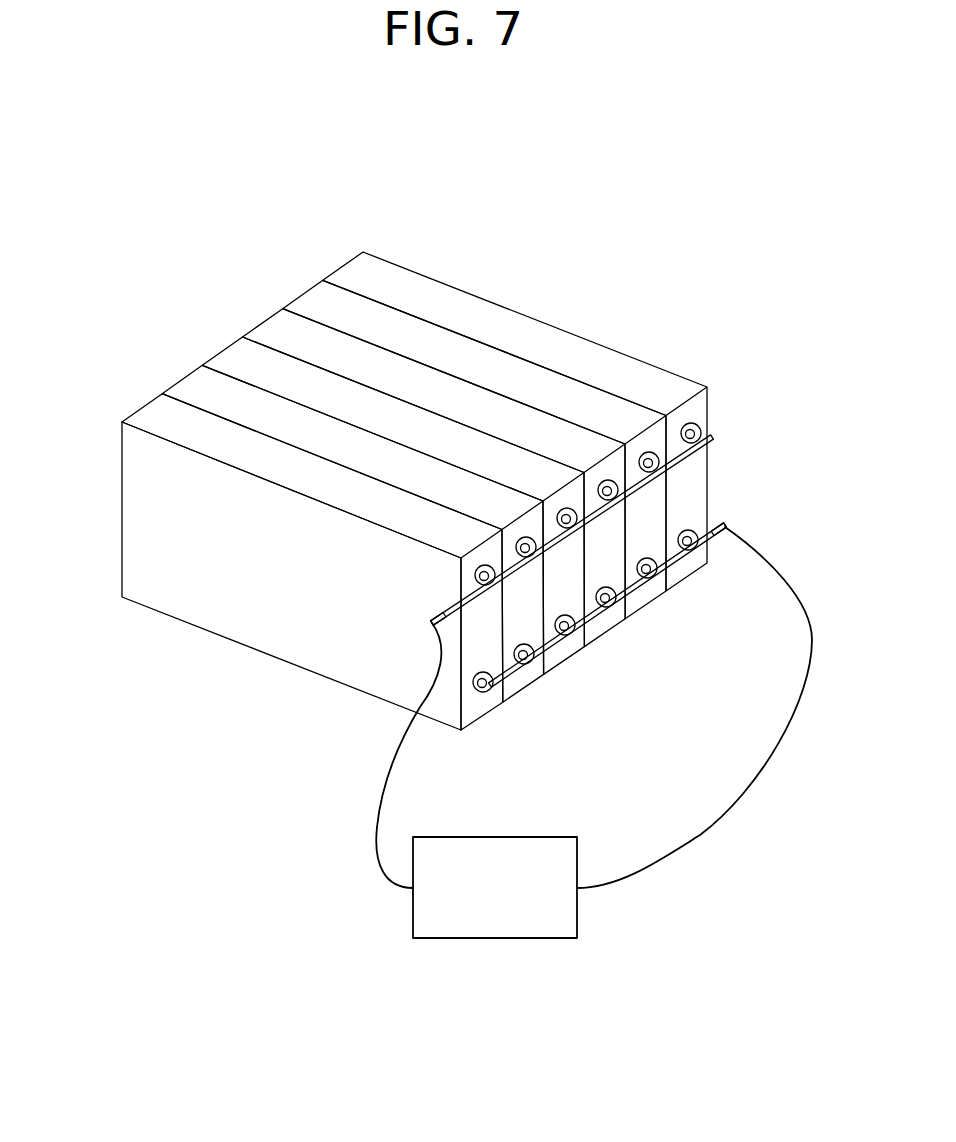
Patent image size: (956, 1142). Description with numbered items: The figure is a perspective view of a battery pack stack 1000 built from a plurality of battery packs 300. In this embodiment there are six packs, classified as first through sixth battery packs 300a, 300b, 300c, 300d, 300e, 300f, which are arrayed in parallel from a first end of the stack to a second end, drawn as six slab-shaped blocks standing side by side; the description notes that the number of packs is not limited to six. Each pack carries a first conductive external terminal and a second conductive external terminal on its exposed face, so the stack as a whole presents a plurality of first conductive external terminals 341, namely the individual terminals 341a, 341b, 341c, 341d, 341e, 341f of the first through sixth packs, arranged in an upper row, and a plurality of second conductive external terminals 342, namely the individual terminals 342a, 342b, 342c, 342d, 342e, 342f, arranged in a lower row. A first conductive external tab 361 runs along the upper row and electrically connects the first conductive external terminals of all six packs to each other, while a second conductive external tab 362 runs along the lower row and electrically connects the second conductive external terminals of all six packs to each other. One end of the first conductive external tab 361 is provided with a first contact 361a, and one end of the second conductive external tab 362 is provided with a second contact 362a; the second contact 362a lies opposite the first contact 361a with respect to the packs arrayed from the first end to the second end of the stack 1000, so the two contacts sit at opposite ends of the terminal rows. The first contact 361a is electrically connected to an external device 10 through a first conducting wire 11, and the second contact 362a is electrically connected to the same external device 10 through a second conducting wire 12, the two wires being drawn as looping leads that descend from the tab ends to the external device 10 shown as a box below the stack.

The battery pack stack 1000 is at (608, 210).
The battery packs 300 is at (139, 250).
The first battery pack 300a is at (139, 405).
The second battery pack 300b is at (180, 377).
The third battery pack 300c is at (221, 348).
The fourth battery pack 300d is at (262, 319).
The fifth battery pack 300e is at (302, 291).
The sixth battery pack 300f is at (341, 263).
The first conductive external terminals 341 is at (699, 421).
The first conductive external terminal of first battery pack 341a is at (477, 567).
The first conductive external terminal of second battery pack 341b is at (518, 539).
The first conductive external terminal of third battery pack 341c is at (558, 510).
The first conductive external terminal of fourth battery pack 341d is at (600, 482).
The first conductive external terminal of fifth battery pack 341e is at (641, 454).
The first conductive external terminal of sixth battery pack 341f is at (684, 426).
The second conductive external terminals 342 is at (461, 679).
The second conductive external terminal of first battery pack 342a is at (485, 693).
The second conductive external terminal of second battery pack 342b is at (526, 664).
The second conductive external terminal of third battery pack 342c is at (566, 636).
The second conductive external terminal of fourth battery pack 342d is at (606, 608).
The second conductive external terminal of fifth battery pack 342e is at (645, 579).
The second conductive external terminal of sixth battery pack 342f is at (684, 559).
The first conductive external tab 361 is at (714, 441).
The first contact 361a is at (432, 621).
The second conductive external tab 362 is at (734, 526).
The second contact 362a is at (723, 522).
The first conducting wire 11 is at (376, 821).
The second conducting wire 12 is at (685, 833).
The external device 10 is at (495, 887).